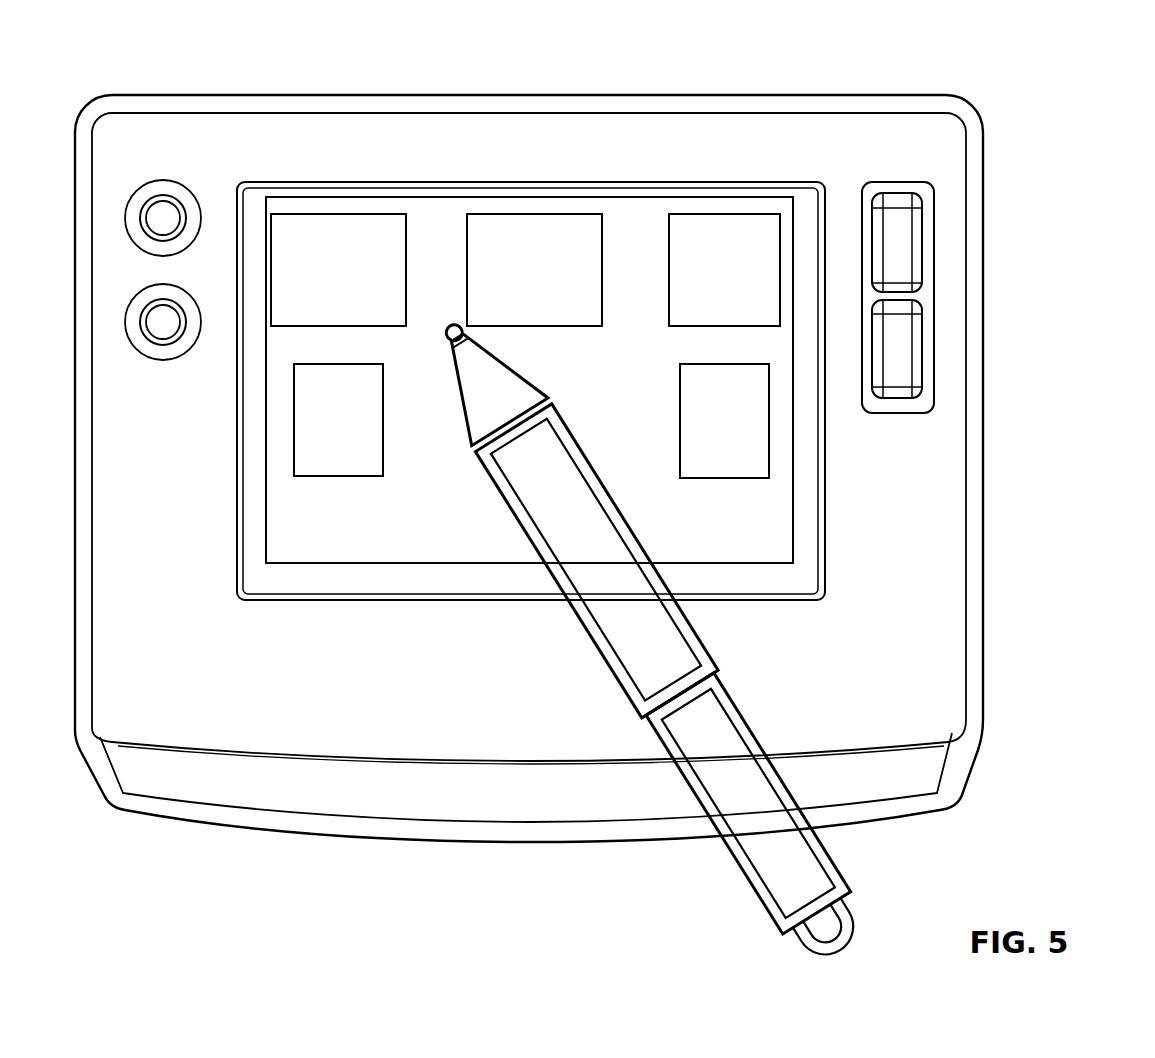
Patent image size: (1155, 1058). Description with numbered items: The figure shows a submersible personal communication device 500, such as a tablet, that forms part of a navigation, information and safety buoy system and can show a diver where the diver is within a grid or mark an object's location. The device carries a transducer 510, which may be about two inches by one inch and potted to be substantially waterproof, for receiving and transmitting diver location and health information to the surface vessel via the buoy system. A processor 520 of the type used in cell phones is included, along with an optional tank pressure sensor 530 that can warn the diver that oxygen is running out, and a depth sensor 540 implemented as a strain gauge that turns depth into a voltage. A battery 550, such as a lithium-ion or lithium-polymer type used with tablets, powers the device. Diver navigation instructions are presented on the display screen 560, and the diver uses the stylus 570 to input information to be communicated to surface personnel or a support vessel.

The personal communication device 500 is at (1048, 74).
The transducer 510 is at (345, 206).
The processor 520 is at (530, 206).
The tank pressure sensor 530 is at (729, 206).
The depth sensor 540 is at (282, 412).
The battery 550 is at (782, 440).
The display screen 560 is at (312, 507).
The stylus 570 is at (720, 886).